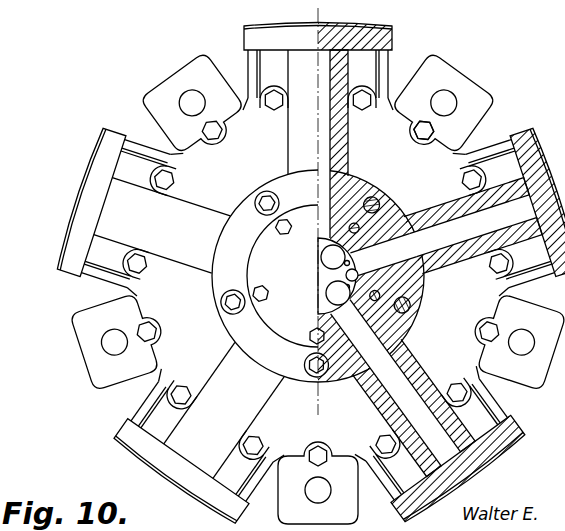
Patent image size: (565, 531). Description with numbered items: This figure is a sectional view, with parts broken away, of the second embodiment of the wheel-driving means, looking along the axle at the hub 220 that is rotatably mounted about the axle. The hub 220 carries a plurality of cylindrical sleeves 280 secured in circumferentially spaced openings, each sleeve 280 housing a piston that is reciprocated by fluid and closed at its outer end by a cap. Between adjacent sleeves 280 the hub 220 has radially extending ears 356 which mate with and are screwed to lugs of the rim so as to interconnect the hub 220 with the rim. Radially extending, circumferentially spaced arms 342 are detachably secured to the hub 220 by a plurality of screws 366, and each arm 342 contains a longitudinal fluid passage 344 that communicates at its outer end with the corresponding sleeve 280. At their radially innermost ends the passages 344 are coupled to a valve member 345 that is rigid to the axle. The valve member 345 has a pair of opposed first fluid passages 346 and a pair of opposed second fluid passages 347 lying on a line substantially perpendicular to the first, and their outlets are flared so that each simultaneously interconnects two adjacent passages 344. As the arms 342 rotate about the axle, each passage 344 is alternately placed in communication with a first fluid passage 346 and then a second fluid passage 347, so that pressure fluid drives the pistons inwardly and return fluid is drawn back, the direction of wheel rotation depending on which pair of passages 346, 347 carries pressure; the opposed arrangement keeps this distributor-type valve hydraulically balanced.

The cylindrical sleeve 280 is at (386, 64).
The ear 356 is at (450, 80).
The hub 220 is at (434, 160).
The arm 342 is at (290, 139).
The fluid passage 344 is at (322, 137).
The screw 366 is at (264, 198).
The second fluid passage 347 is at (331, 258).
The valve member 345 is at (325, 277).
The first fluid passage 346 is at (333, 294).